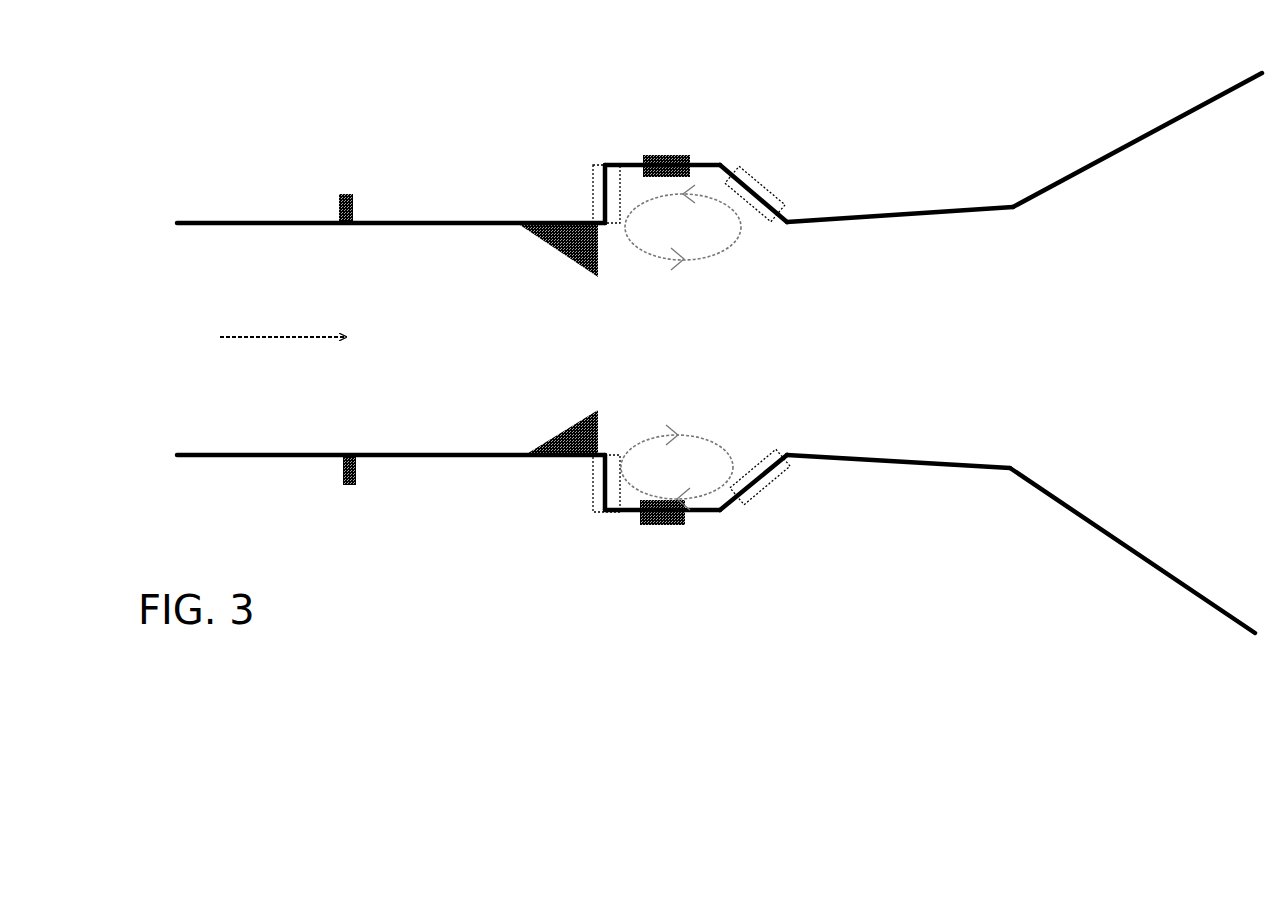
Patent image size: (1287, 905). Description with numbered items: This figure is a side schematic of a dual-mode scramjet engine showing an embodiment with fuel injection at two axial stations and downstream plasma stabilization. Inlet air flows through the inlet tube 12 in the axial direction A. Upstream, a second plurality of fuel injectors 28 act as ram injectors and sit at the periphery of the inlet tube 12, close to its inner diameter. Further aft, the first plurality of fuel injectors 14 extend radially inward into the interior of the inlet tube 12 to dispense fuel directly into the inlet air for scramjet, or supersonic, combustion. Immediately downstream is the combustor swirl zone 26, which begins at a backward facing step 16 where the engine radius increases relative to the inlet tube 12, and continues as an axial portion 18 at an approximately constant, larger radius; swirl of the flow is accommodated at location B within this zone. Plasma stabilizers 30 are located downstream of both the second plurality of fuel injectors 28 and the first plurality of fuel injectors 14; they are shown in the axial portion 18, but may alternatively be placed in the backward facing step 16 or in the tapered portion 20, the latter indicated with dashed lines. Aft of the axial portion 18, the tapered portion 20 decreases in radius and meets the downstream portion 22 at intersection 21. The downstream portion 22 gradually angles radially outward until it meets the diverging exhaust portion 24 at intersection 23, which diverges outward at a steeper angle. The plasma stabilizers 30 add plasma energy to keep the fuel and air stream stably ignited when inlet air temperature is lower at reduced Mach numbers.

The inlet tube 12 is at (270, 220).
The first plurality of fuel injectors 14 is at (520, 222).
The backward facing step 16 is at (597, 175).
The axial portion 18 is at (630, 165).
The tapered portion 20 is at (728, 168).
The intersection 21 is at (797, 235).
The downstream portion 22 is at (922, 207).
The intersection 23 is at (1017, 212).
The diverging exhaust portion 24 is at (1150, 115).
The combustor swirl zone 26 is at (736, 147).
The second plurality of fuel injectors 28 is at (340, 226).
The plasma stabilizers 30 is at (592, 192).
The axial direction A is at (242, 358).
The swirl location B is at (723, 247).